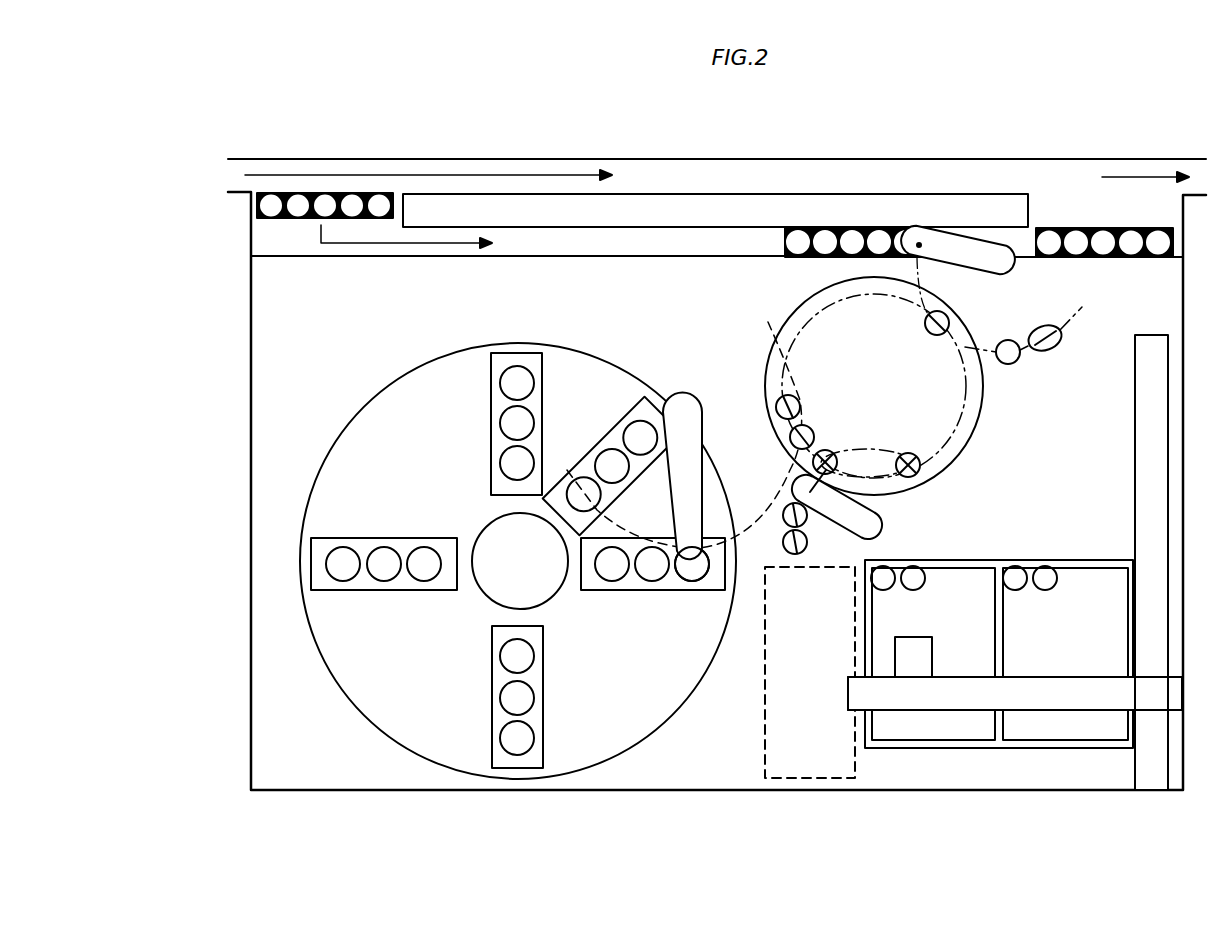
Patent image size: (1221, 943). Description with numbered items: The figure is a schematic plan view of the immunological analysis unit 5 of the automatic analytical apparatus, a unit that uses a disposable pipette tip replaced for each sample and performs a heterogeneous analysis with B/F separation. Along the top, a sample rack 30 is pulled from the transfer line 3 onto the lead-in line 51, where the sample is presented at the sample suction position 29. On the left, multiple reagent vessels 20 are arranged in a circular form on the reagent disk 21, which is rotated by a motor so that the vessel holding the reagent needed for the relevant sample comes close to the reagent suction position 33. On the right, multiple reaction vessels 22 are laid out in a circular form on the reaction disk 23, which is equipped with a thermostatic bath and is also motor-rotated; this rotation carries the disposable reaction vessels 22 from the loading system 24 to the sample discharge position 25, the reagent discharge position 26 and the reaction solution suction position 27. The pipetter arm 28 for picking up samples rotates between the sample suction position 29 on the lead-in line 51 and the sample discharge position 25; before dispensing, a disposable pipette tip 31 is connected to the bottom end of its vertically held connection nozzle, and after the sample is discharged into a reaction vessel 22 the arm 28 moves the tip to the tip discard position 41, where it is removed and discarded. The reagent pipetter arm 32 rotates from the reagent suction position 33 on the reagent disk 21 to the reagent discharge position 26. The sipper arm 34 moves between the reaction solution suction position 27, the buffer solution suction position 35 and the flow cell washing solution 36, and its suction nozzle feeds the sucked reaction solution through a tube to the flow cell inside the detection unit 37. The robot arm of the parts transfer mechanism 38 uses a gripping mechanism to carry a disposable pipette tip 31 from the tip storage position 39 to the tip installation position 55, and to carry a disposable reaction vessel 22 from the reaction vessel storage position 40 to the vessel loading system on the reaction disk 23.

The transfer line 3 is at (515, 166).
The immunological analysis unit 5 is at (249, 604).
The reagent vessels 20 is at (528, 760).
The reagent disk 21 is at (428, 760).
The reaction vessels 22 is at (780, 417).
The reaction disk 23 is at (985, 433).
The loading system 24 is at (922, 478).
The sample discharge position 25 is at (928, 331).
The reagent discharge position 26 is at (808, 428).
The reaction solution suction position 27 is at (832, 455).
The pipetter arm 28 is at (975, 250).
The sample suction position 29 is at (858, 232).
The sample rack 30 is at (313, 194).
The disposable pipette tip 31 is at (1013, 584).
The reagent pipetter arm 32 is at (683, 406).
The reagent suction position 33 is at (690, 582).
The sipper arm 34 is at (832, 522).
The buffer solution suction position 35 is at (788, 522).
The flow cell washing solution 36 is at (795, 556).
The detection unit 37 is at (808, 778).
The parts transfer mechanism 38 is at (973, 698).
The tip storage position 39 is at (1067, 732).
The reaction vessel storage position 40 is at (898, 725).
The tip discard position 41 is at (1040, 333).
The lead-in line 51 is at (633, 240).
The tip installation position 55 is at (1015, 362).